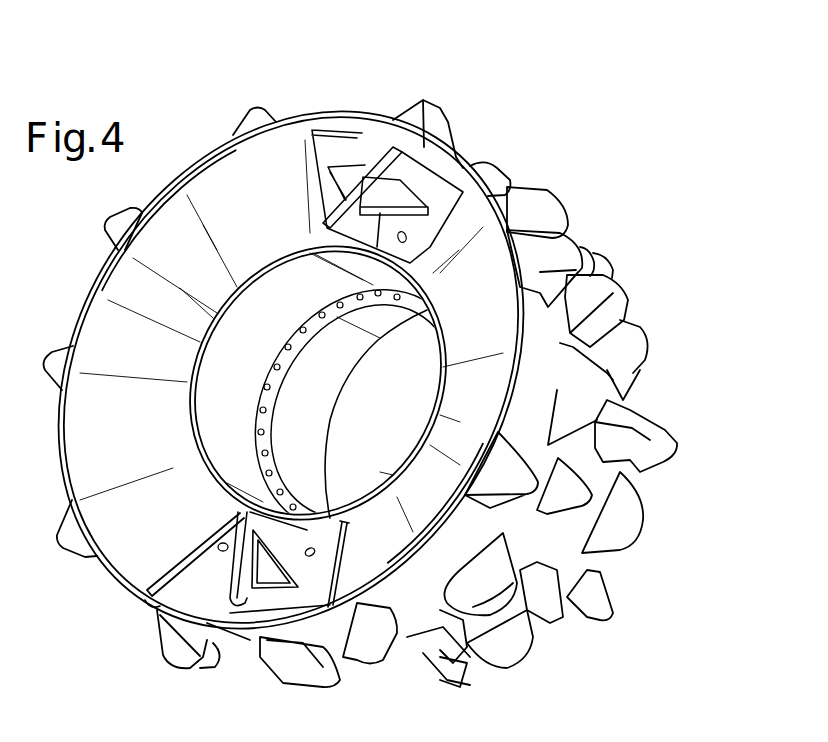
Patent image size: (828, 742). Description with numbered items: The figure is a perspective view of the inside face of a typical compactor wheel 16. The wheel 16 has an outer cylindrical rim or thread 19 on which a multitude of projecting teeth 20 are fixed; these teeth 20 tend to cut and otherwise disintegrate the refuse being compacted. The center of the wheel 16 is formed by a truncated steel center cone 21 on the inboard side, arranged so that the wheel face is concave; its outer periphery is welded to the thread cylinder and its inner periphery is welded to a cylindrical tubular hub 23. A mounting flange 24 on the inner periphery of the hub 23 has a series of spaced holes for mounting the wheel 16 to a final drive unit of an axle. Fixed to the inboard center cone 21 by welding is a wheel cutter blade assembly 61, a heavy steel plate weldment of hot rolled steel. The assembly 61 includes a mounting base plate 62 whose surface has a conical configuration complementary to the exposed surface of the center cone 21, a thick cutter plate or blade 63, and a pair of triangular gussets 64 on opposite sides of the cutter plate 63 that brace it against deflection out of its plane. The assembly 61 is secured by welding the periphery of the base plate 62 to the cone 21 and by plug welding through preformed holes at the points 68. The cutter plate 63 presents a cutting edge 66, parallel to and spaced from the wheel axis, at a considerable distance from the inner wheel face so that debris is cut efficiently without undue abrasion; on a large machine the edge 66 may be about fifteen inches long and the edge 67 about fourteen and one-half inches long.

The wheel 16 is at (196, 144).
The outer cylindrical rim or thread 19 is at (354, 113).
The projecting teeth 20 is at (538, 253).
The center cone 21 is at (152, 248).
The cylindrical tubular hub 23 is at (212, 409).
The mounting flange 24 is at (366, 294).
The wheel cutter blade assembly 61 is at (338, 143).
The mounting base plate 62 is at (187, 562).
The cutter plate or blade 63 is at (258, 600).
The triangular gussets 64 is at (165, 602).
The cutting edge 66 is at (265, 515).
The edge 67 is at (209, 588).
The plug weld points 68 is at (320, 548).